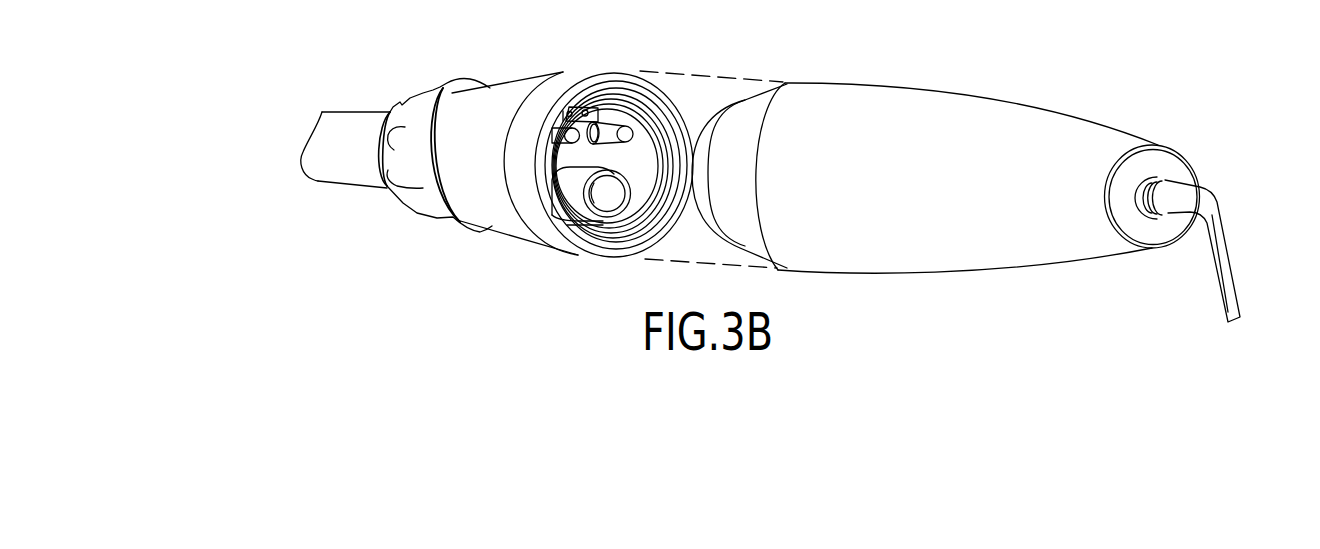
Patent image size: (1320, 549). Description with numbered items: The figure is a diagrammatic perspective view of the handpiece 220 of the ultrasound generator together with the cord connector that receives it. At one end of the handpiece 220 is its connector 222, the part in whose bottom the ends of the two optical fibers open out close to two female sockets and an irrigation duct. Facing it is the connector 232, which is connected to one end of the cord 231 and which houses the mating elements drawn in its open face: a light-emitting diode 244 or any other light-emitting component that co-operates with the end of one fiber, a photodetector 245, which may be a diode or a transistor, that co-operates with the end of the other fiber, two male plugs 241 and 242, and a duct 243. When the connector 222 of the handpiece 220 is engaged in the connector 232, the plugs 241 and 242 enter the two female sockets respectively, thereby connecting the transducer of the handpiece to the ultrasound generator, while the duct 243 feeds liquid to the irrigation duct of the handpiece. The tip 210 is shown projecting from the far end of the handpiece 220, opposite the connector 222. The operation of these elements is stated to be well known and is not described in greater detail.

The tip / probe 210 is at (1225, 213).
The handpiece 220 is at (974, 114).
The connector of the handpiece 222 is at (707, 223).
The cord 231 is at (346, 174).
The connector 232 is at (503, 223).
The male plug 241 is at (633, 130).
The male plug 242 is at (566, 136).
The duct 243 is at (607, 208).
The light-emitting diode (LED) 244 is at (625, 126).
The photodetector 245 is at (580, 106).